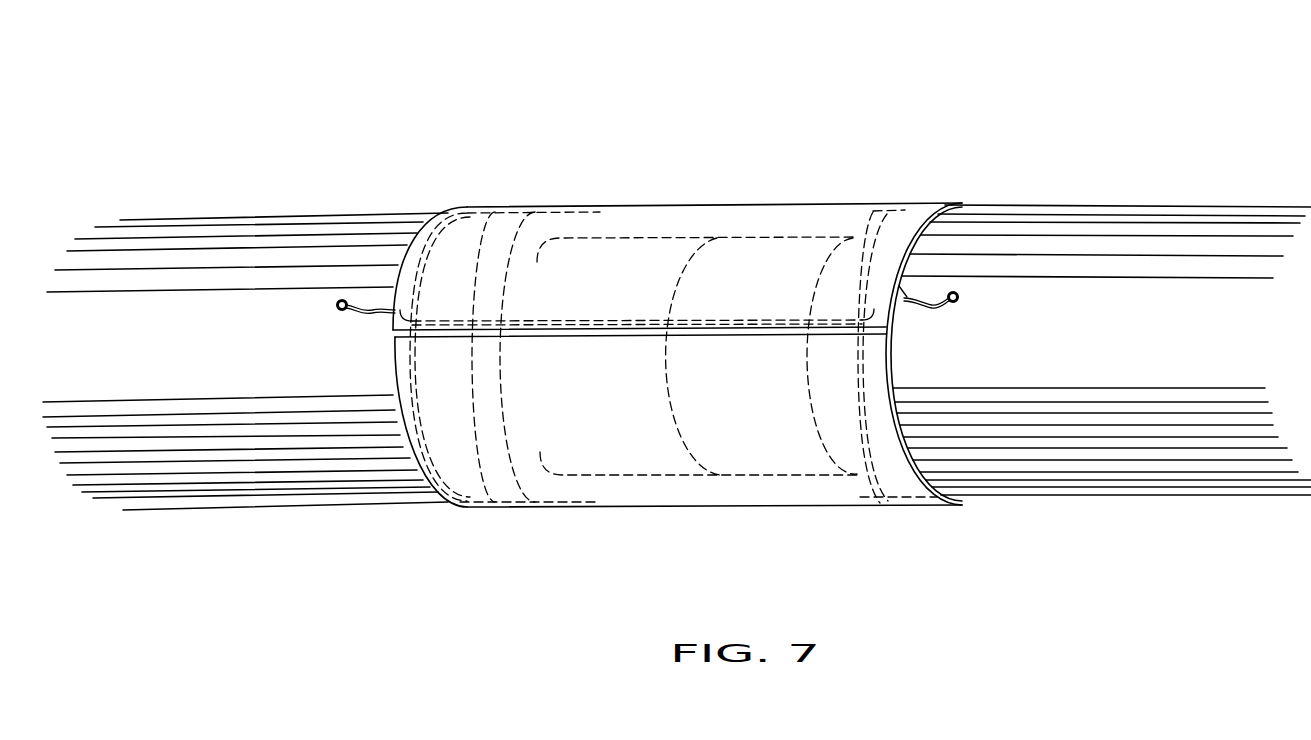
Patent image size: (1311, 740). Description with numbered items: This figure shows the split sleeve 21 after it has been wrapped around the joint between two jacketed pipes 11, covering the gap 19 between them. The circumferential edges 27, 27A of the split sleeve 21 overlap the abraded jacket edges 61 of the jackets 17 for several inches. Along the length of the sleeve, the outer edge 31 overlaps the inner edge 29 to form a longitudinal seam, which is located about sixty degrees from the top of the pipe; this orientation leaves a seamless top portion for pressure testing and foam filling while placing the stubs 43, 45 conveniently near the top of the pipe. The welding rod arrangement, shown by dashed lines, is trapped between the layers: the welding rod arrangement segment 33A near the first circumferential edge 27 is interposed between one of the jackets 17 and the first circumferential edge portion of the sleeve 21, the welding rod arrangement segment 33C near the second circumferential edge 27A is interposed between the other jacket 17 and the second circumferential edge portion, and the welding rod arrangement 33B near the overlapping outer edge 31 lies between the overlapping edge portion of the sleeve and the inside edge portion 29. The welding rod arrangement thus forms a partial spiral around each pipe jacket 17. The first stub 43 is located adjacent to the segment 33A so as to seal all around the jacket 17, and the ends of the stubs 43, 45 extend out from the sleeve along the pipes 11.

The pipes 11 is at (672, 305).
The jackets 17 is at (798, 273).
The gap 19 is at (678, 394).
The split sleeve 21 is at (714, 284).
The first circumferential edge 27 is at (369, 393).
The second circumferential edge 27A is at (990, 386).
The inner edge 29 is at (986, 227).
The outer edge 31 is at (639, 366).
The welding rod arrangement segment 33A is at (477, 362).
The welding rod arrangement 33B is at (637, 361).
The welding rod arrangement segment 33C is at (886, 340).
The first stub 43 is at (335, 342).
The stub 45 is at (964, 331).
The abraded jacket edges 61 is at (669, 311).